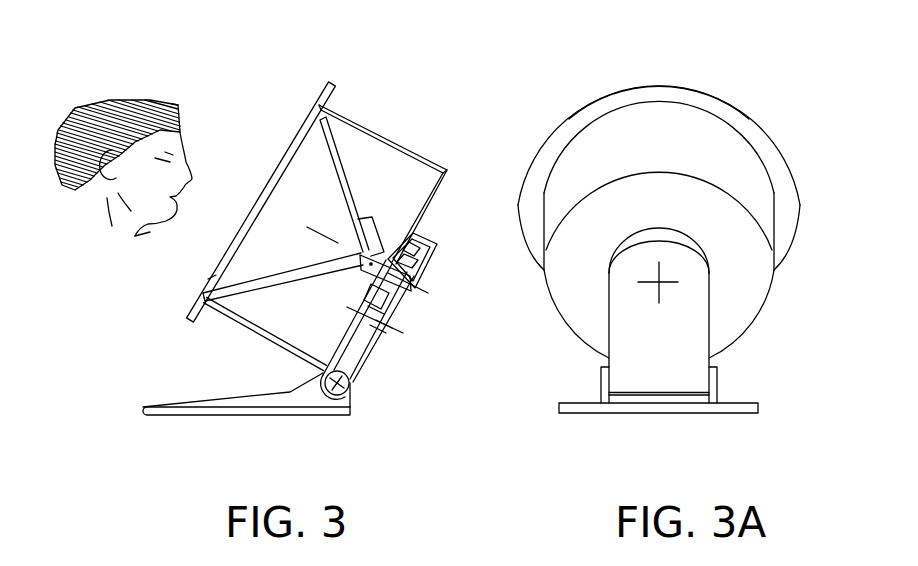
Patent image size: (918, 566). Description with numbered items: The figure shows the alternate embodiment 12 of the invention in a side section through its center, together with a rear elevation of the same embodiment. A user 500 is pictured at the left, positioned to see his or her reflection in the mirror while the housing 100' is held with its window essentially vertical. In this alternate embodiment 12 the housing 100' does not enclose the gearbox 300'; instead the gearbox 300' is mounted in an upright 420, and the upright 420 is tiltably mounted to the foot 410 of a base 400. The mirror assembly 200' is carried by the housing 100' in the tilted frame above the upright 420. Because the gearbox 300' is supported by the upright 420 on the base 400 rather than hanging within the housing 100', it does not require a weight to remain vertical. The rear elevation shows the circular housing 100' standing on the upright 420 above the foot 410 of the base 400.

In FIG. 3, the user 500 is at (152, 62).
In FIG. 3, the alternate embodiment 12 is at (288, 88).
In FIG. 3A, the alternate embodiment 12 is at (788, 106).
In FIG. 3, the housing 100' is at (325, 219).
In FIG. 3, the mirror assembly 200' is at (318, 204).
In FIG. 3, the gearbox 300' is at (428, 234).
In FIG. 3, the base 400 is at (307, 378).
In FIG. 3, the foot 410 is at (240, 415).
In FIG. 3A, the foot 410 is at (647, 413).
In FIG. 3, the upright 420 is at (387, 357).
In FIG. 3A, the upright 420 is at (623, 335).